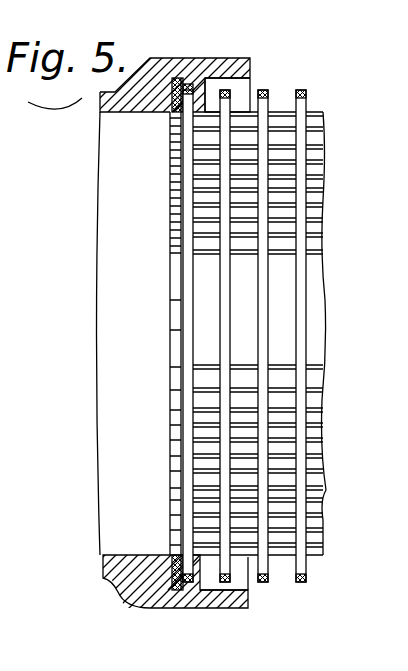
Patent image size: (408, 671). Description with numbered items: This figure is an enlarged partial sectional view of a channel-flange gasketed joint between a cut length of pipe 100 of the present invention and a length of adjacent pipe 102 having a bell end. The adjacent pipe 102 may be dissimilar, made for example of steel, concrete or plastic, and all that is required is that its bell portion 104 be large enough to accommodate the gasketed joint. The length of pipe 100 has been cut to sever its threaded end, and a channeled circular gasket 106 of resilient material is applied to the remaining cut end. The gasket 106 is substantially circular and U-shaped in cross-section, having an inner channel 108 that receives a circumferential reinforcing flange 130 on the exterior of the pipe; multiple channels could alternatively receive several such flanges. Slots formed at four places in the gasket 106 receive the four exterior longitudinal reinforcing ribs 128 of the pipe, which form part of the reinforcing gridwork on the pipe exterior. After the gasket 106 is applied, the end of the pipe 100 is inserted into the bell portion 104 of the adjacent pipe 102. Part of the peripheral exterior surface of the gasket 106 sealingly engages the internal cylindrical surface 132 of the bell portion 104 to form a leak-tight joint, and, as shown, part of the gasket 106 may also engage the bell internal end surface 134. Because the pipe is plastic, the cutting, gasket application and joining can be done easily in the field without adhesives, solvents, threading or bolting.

The length of pipe 100 is at (205, 339).
The length of adjacent pipe having a bell end 102 is at (103, 588).
The bell portion 104 is at (148, 70).
The channeled circular gasket 106 is at (176, 100).
The inner channel 108 is at (194, 88).
The exterior longitudinal reinforcing ribs 128 is at (285, 185).
The circumferential reinforcing flange 130 is at (307, 108).
The internal cylindrical surface 132 is at (237, 82).
The bell internal end surface 134 is at (176, 117).